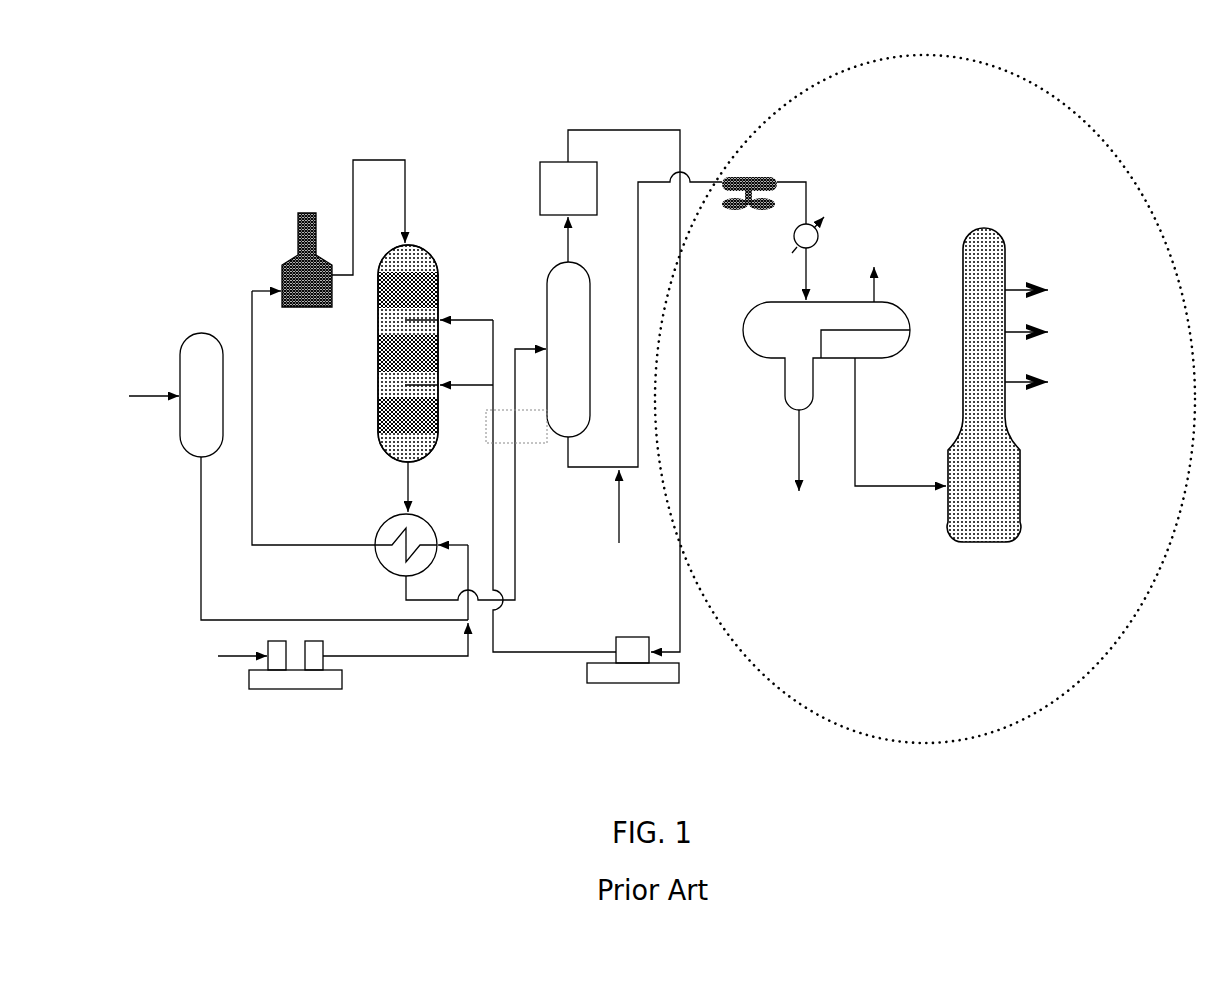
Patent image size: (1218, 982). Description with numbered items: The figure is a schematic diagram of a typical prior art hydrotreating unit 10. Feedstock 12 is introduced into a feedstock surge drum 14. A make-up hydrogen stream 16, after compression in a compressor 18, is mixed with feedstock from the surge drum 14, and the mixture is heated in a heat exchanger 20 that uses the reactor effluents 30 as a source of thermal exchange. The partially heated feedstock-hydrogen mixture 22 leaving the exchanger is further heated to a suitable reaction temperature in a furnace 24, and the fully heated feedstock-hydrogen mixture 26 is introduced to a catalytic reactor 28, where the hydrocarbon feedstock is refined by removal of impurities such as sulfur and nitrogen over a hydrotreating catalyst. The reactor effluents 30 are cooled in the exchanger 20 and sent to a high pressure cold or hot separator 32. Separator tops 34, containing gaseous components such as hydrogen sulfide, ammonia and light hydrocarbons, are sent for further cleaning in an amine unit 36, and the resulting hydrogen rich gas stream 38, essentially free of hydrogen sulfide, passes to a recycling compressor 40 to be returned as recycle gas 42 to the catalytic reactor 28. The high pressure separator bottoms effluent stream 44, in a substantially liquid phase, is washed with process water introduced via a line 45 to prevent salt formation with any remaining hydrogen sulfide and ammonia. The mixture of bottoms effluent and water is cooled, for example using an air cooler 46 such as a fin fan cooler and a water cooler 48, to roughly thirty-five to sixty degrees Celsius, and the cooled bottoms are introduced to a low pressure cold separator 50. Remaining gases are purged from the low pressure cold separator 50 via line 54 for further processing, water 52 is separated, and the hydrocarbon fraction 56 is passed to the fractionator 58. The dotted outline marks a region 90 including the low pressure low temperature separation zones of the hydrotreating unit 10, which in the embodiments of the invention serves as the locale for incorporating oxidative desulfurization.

The hydrotreating unit 10 is at (198, 158).
The feedstock 12 is at (155, 397).
The feedstock surge drum 14 is at (324, 476).
The make-up hydrogen stream 16 is at (228, 657).
The compressor 18 is at (290, 690).
The heat exchanger 20 is at (380, 528).
The partially heated feedstock-hydrogen mixture 22 is at (300, 546).
The furnace 24 is at (297, 248).
The fully heated feedstock-hydrogen mixture 26 is at (368, 160).
The catalytic reactor 28 is at (364, 368).
The reactor effluents 30 is at (408, 478).
The high pressure cold or hot separator 32 is at (568, 349).
The separator tops 34 is at (568, 250).
The amine unit 36 is at (568, 188).
The hydrogen rich gas stream 38 is at (645, 130).
The recycling compressor 40 is at (646, 683).
The recycle gas 42 is at (459, 322).
The high pressure separator bottoms effluent stream 44 is at (592, 468).
The line 45 is at (619, 524).
The air cooler 46 is at (746, 177).
The water cooler 48 is at (818, 238).
The low pressure cold separator 50 is at (826, 356).
The water 52 is at (799, 433).
The line 54 is at (875, 300).
The hydrocarbon fraction 56 is at (898, 487).
The fractionator 58 is at (997, 385).
The region 90 is at (812, 712).